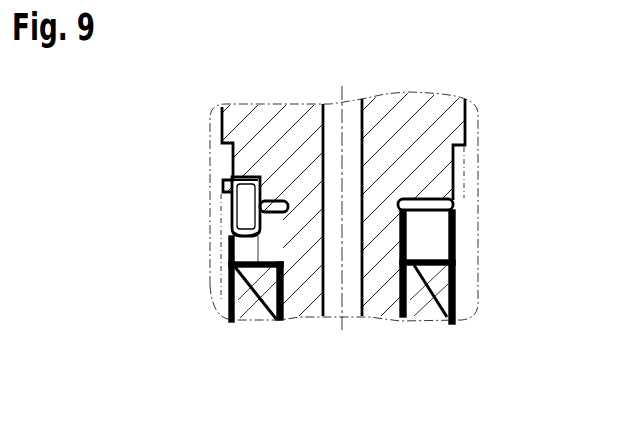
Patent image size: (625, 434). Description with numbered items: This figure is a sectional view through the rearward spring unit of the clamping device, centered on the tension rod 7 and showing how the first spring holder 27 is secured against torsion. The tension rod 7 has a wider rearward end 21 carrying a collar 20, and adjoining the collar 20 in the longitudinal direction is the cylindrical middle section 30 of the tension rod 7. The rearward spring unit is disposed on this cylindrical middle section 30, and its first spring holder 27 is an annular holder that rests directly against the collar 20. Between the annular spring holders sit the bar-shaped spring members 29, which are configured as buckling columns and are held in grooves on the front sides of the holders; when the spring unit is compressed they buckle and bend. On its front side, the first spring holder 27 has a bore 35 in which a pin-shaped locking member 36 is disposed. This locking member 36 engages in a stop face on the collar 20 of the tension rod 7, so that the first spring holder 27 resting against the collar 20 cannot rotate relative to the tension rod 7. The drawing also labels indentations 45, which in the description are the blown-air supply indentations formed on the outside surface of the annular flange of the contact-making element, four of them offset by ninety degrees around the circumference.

The wider rearward end 21 is at (430, 143).
The tension rod 7 is at (460, 174).
The collar 20 is at (447, 200).
The first spring holder 27 is at (433, 233).
The cylindrical middle section 30 is at (385, 280).
The spring members 29 is at (245, 310).
The indentations 45 is at (240, 178).
The locking member 36 is at (243, 208).
The bore 35 is at (227, 232).